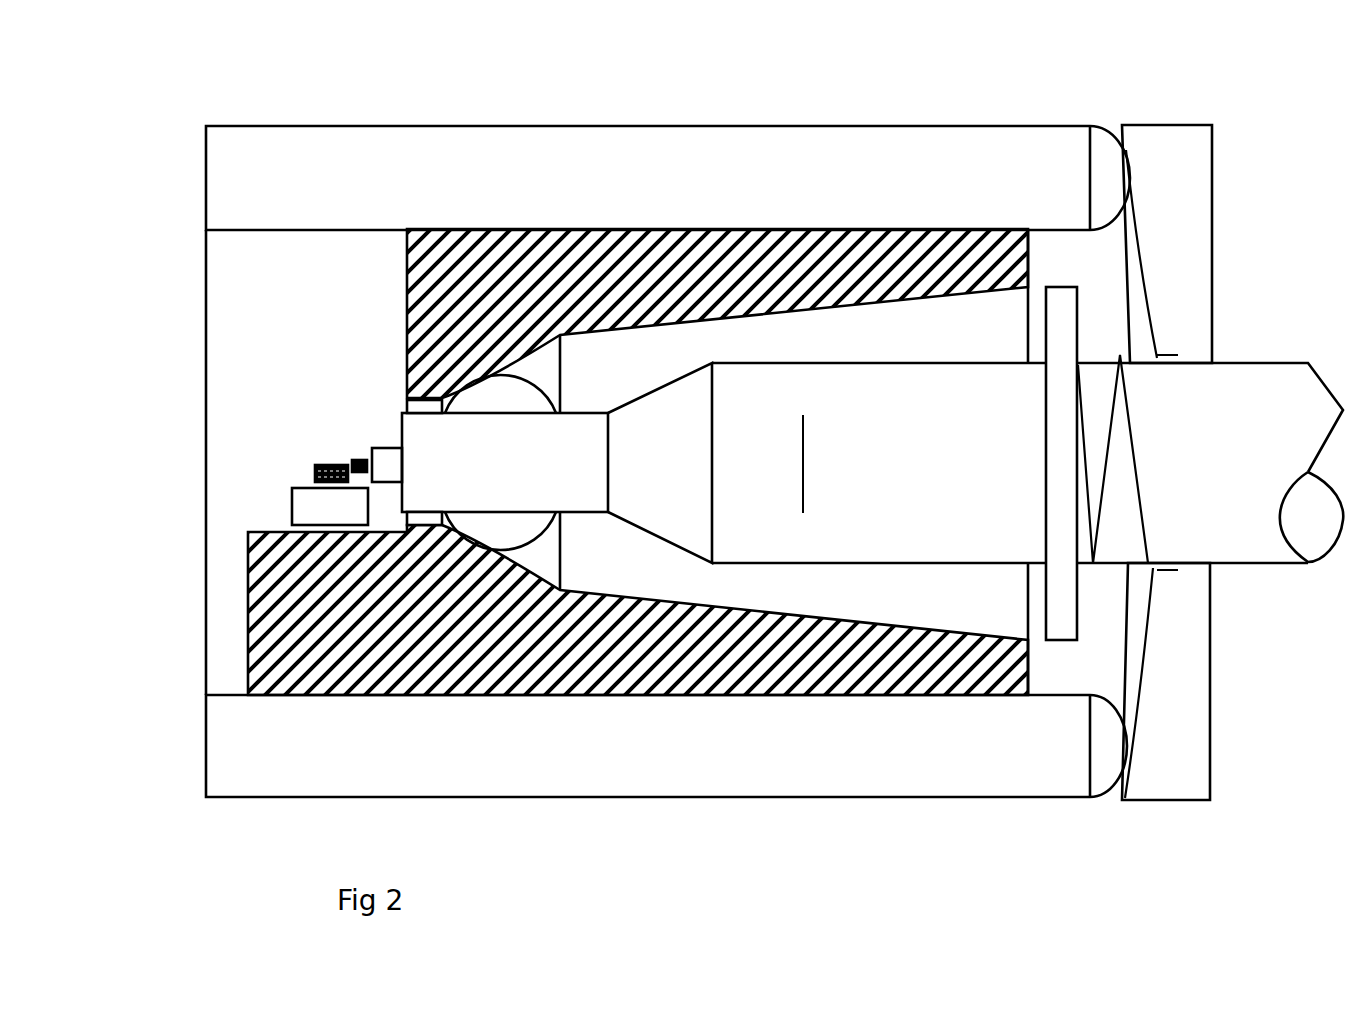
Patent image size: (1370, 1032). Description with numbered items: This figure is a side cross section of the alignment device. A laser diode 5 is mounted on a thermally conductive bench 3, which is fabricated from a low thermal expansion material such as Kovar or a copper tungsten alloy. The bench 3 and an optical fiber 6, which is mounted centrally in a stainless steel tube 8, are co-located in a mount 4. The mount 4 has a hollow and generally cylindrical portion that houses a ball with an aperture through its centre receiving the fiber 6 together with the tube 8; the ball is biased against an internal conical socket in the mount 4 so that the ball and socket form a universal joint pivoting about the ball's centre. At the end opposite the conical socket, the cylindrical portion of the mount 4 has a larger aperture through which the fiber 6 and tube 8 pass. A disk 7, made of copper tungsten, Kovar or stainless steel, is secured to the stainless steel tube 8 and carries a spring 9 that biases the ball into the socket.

The thermally conductive bench 3 is at (321, 468).
The mount 4 is at (683, 667).
The laser diode 5 is at (295, 482).
The optical fiber 6 is at (360, 450).
The disk 7 is at (1175, 167).
The stainless steel tube 8 is at (1260, 552).
The spring 9 is at (1150, 525).